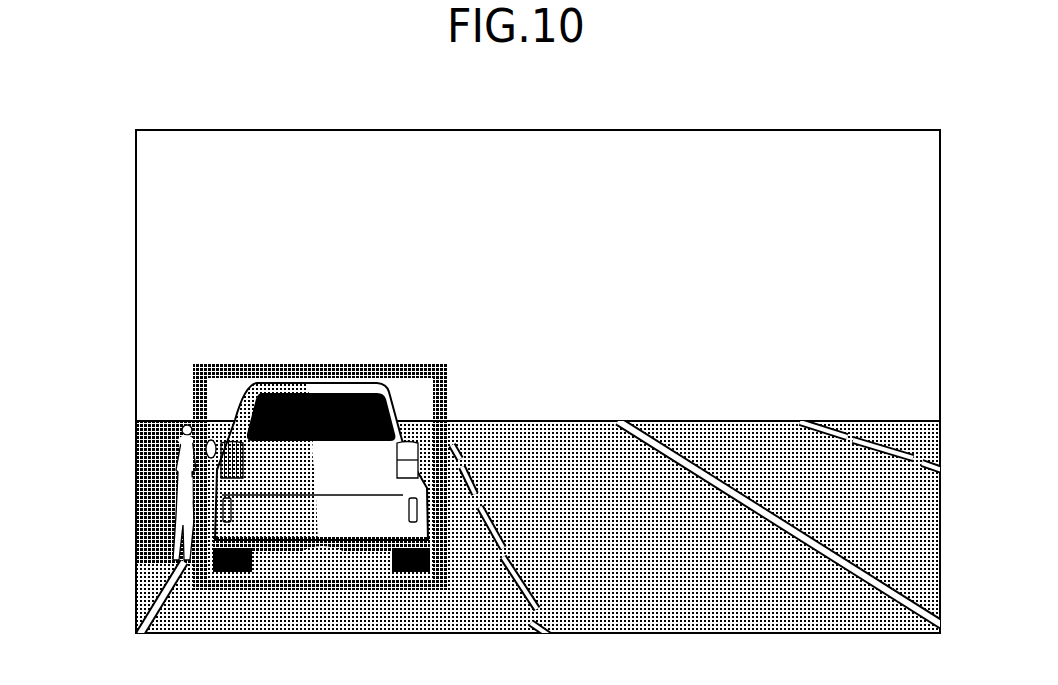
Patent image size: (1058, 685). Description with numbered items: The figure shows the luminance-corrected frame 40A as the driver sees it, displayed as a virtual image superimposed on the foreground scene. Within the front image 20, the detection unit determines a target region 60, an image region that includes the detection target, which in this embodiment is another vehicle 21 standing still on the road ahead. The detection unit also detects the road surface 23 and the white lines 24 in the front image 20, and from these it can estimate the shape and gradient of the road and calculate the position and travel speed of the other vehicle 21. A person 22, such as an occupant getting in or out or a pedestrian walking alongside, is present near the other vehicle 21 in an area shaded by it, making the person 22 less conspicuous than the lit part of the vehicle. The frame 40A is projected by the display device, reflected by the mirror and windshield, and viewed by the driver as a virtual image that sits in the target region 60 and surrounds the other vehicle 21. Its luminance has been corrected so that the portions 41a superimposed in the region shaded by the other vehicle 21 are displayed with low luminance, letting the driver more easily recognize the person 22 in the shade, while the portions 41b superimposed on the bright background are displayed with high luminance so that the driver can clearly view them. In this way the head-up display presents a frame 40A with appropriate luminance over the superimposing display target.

The front image 20 is at (527, 126).
The other vehicle 21 is at (398, 388).
The person 22 is at (182, 412).
The road surface 23 is at (752, 436).
The white lines 24 is at (473, 464).
The frame 40A is at (439, 360).
The portions superimposed in the shaded region 41a is at (183, 434).
The portions superimposed in the bright background 41b is at (213, 363).
The target region 60 is at (312, 360).